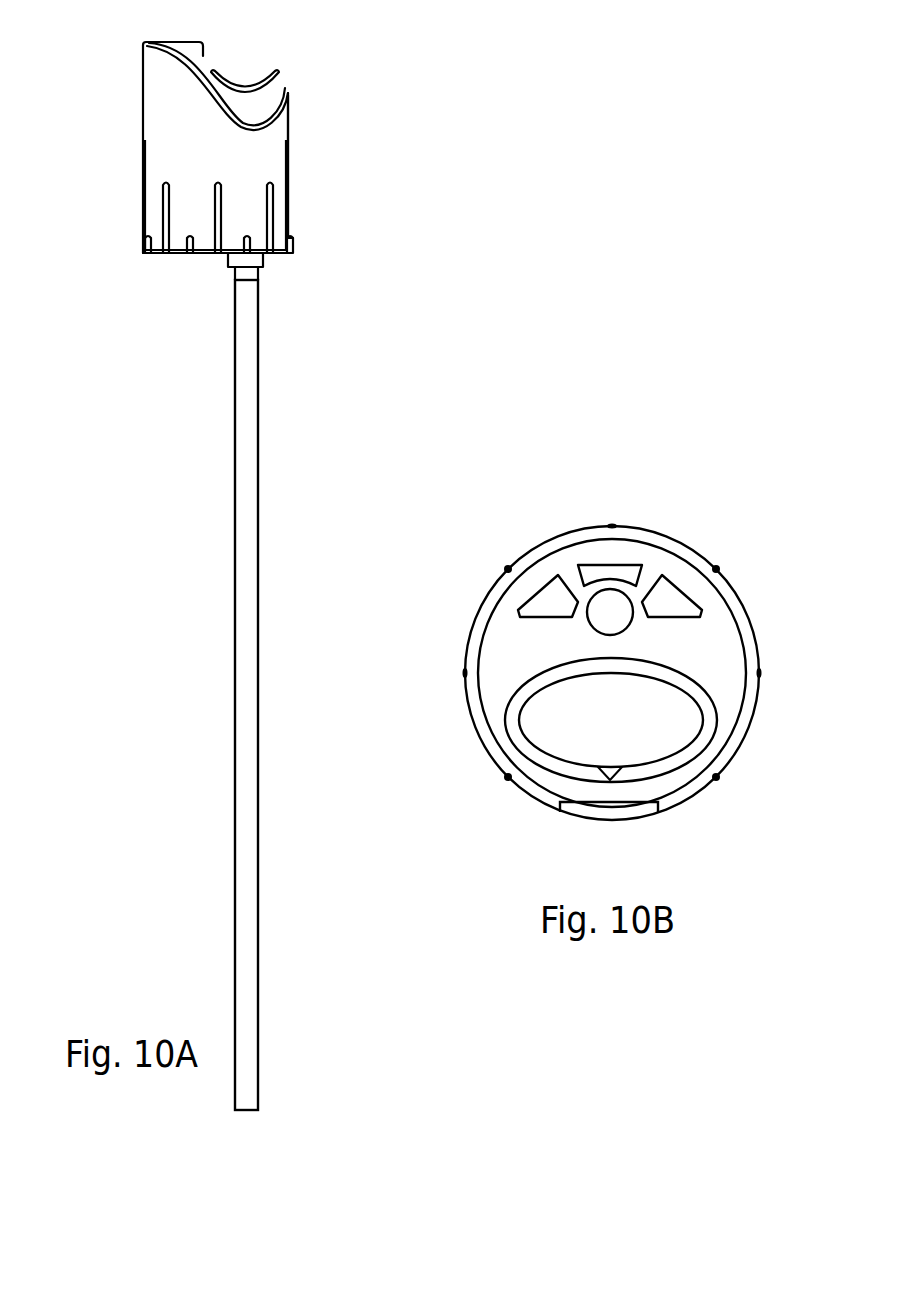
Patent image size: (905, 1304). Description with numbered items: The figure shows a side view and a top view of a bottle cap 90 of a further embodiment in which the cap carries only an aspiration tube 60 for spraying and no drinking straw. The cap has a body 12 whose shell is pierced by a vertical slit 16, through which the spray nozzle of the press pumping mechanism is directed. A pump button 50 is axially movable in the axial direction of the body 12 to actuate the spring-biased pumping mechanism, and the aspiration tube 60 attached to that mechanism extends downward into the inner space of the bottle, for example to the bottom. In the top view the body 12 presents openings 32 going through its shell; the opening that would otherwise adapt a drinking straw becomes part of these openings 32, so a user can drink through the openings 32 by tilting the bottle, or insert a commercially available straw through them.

In FIG. 10A, the body 12 is at (273, 168).
In FIG. 10A, the vertical slit 16 is at (290, 115).
In FIG. 10B, the opening 32 is at (608, 572).
In FIG. 10A, the pump button 50 is at (260, 73).
In FIG. 10B, the pump button 50 is at (627, 708).
In FIG. 10A, the aspiration tube 60 is at (248, 602).
In FIG. 10A, the bottle cap 90 is at (127, 155).
In FIG. 10B, the bottle cap 90 is at (498, 553).